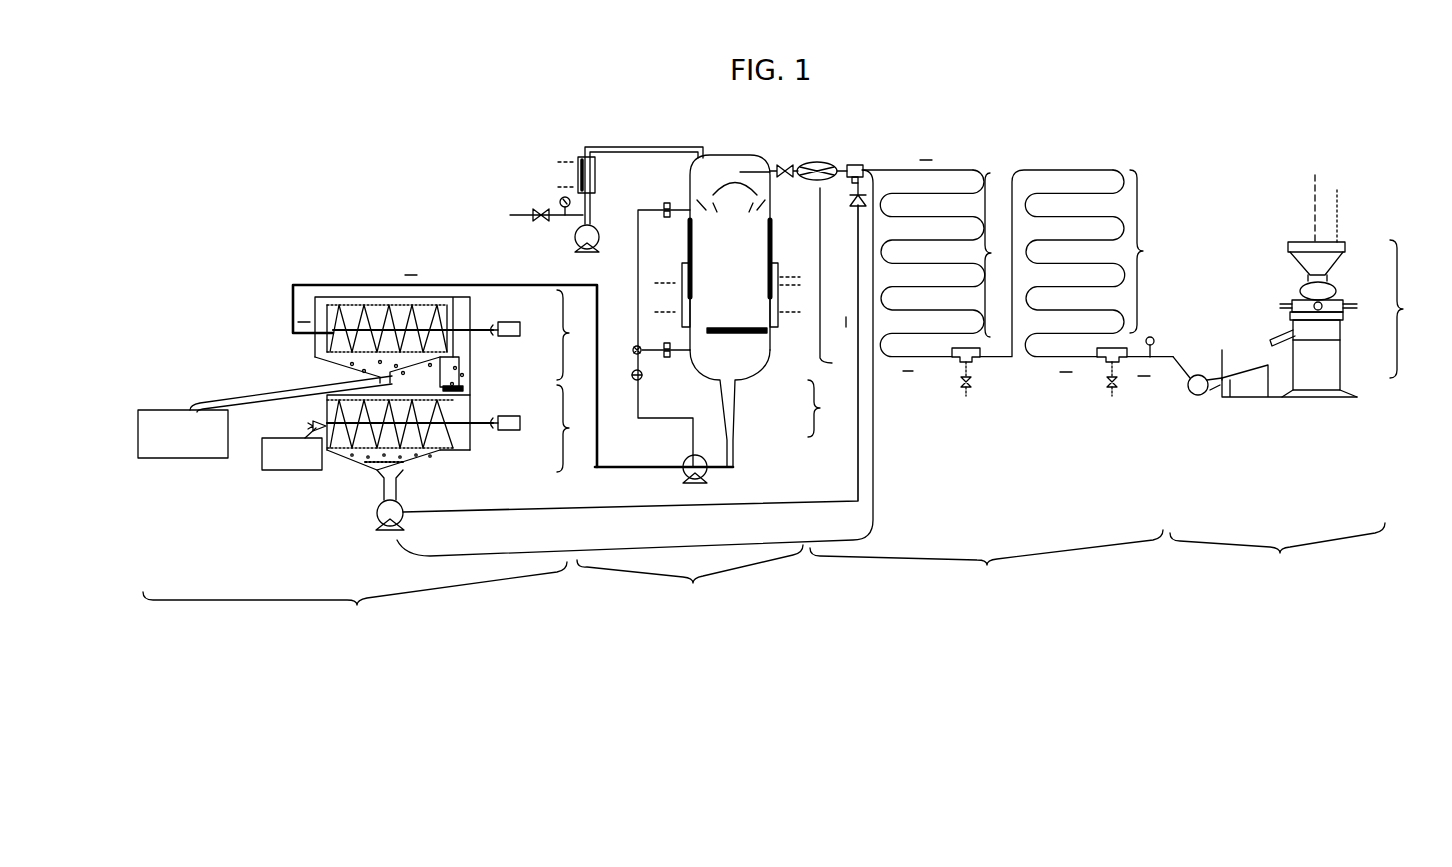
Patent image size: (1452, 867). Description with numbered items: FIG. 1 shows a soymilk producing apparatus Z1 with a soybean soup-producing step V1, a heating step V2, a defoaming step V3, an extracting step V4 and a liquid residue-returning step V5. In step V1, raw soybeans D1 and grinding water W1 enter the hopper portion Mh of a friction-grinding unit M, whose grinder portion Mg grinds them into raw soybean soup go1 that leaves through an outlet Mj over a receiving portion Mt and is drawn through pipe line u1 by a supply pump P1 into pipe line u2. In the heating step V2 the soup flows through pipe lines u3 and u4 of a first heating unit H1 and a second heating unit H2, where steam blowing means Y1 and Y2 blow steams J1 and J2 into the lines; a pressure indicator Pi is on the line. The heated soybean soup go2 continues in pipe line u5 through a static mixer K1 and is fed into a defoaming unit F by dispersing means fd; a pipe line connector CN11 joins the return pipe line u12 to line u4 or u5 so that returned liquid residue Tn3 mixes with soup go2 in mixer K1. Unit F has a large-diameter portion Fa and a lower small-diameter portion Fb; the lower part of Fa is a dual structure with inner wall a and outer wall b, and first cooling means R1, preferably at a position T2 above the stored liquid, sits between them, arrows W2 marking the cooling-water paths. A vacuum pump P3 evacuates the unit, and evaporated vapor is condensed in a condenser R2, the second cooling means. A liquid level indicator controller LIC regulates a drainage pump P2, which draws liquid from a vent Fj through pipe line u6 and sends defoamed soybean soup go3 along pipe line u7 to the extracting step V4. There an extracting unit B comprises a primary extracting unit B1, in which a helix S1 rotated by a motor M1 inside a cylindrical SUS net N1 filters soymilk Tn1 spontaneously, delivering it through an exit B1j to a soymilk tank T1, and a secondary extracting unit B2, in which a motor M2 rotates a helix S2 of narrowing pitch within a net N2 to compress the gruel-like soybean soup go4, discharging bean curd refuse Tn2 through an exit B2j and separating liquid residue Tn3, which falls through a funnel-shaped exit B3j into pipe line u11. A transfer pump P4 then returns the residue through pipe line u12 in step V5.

The defoamed soybean soup go3 is at (456, 284).
The cylindrical SUS net N1 is at (422, 303).
The helix S1 is at (437, 317).
The motor M1 is at (520, 331).
The primary extracting unit B1 is at (574, 335).
The gruel-like soybean soup go4 is at (464, 362).
The extracting unit B is at (464, 387).
The first outlet B1j is at (383, 374).
The soymilk Tn1 is at (270, 393).
The soymilk tank T1 is at (140, 433).
The cylindrical SUS net N2 is at (397, 401).
The helix S2 is at (437, 417).
The motor M2 is at (520, 424).
The secondary extracting unit B2 is at (574, 428).
The second inlet nozzle B2j is at (323, 418).
The bean curd refuse Tn2 is at (293, 438).
The position T2 is at (263, 448).
The exit B3j is at (383, 484).
The liquid residue Tn3 is at (397, 500).
The transfer pump P4 is at (406, 523).
The pipe line u11 is at (357, 516).
The pipe line u12 is at (615, 511).
The condenser R2 is at (596, 190).
The cooling water paths W2 is at (789, 344).
The vacuum pump P3 is at (594, 252).
The inner wall a is at (575, 238).
The defoaming unit F is at (773, 208).
The dispersing means fd is at (758, 192).
The first cooling means R1 is at (683, 266).
The outer wall b is at (797, 294).
The large-diameter portion Fa is at (842, 294).
The small-diameter portion Fb is at (831, 408).
The level controller LIC is at (662, 335).
The vent Fj is at (735, 442).
The pipe line u6 is at (735, 459).
The drainage pump P2 is at (708, 478).
The pipe u7 is at (642, 470).
The pipe line u5 is at (778, 166).
The static mixer K1 is at (820, 163).
The pipe line connector CN11 is at (882, 130).
The heated soybean soup go2 is at (918, 148).
The liquid residue-returning step V5 is at (876, 522).
The second heating unit H2 is at (990, 253).
The pipe line u4 is at (920, 165).
The steam J2 is at (966, 388).
The steam blowing means Y2 is at (950, 386).
The pipe line u3 is at (1003, 357).
The first heating unit H1 is at (1102, 263).
The steam J1 is at (1112, 388).
The steam blowing means Y1 is at (1100, 358).
The pressure gauge Pi is at (1150, 336).
The pipe u2 is at (1152, 358).
The supply pump P1 is at (1193, 400).
The outlet pipe go1 is at (1219, 372).
The pipe u1 is at (1218, 376).
The receiving tray Mt is at (1242, 398).
The friction-grinding unit M is at (1409, 309).
The hopper portion Mh is at (1290, 262).
The mill outlet Mj is at (1283, 332).
The grinder portion Mg is at (1340, 352).
The raw material D1 is at (1317, 194).
The water W1 is at (1344, 204).
The soymilk producing apparatus Z1 is at (1290, 135).
The extracting step V4 is at (355, 595).
The defoaming step V3 is at (690, 578).
The heating step V2 is at (986, 566).
The soybean soup-producing step V1 is at (1277, 552).